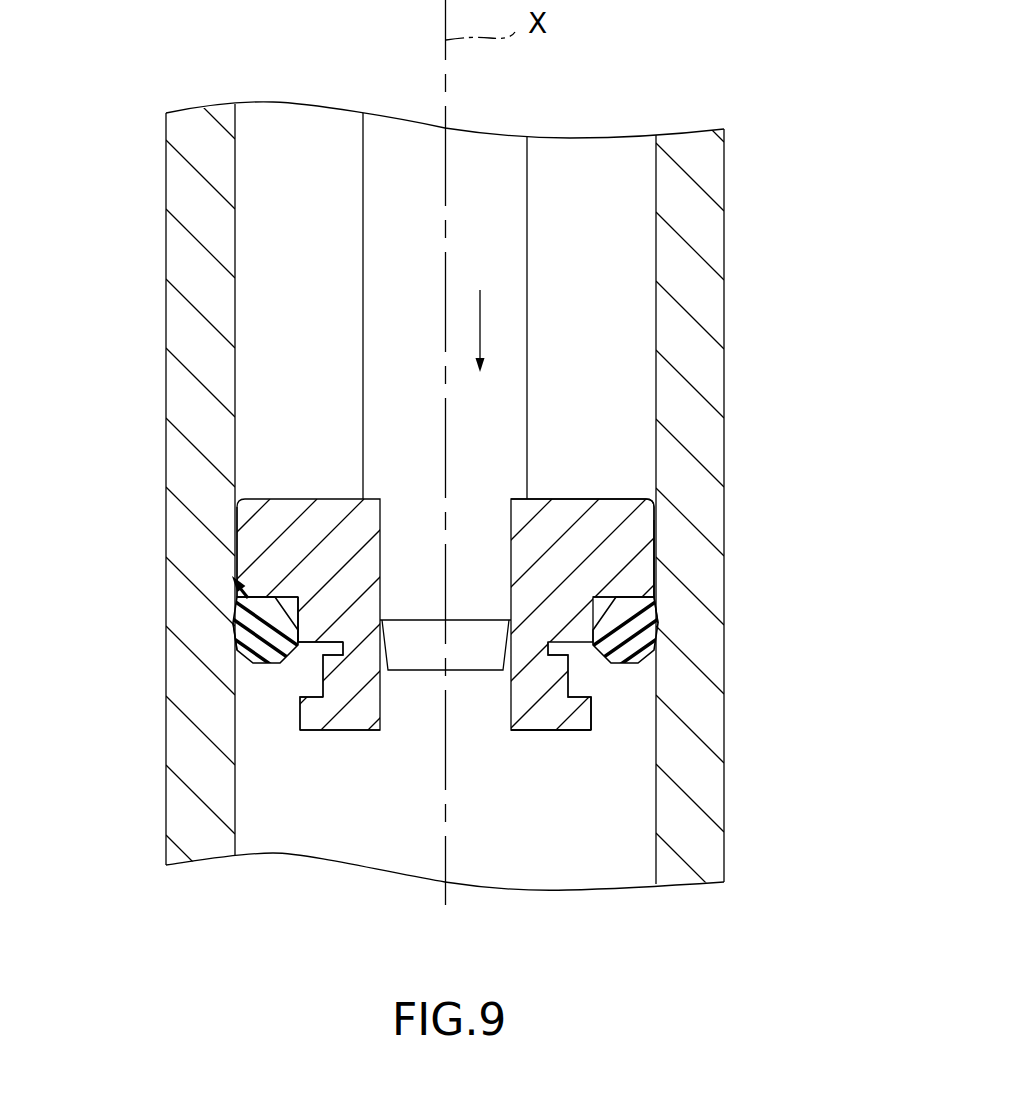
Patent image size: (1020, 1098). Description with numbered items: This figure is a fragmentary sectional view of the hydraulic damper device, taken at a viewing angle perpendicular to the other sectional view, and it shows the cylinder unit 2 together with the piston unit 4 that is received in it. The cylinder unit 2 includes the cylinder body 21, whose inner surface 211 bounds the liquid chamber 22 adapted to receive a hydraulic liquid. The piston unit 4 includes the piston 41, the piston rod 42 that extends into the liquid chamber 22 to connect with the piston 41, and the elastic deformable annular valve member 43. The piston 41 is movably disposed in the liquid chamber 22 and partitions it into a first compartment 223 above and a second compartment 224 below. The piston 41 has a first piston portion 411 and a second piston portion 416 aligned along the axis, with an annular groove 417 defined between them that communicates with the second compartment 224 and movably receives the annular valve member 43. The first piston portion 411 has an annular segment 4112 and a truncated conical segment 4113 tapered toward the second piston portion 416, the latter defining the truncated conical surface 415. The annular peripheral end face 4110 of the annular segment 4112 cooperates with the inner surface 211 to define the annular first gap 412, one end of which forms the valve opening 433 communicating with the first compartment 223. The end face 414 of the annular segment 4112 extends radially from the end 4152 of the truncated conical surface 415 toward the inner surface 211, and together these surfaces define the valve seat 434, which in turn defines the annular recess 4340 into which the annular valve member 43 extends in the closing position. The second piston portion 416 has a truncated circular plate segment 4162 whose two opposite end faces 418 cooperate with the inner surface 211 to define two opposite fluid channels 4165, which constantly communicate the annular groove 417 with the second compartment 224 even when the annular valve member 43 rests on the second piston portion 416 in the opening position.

The cylinder unit 2 is at (733, 222).
The liquid chamber 22 is at (596, 313).
The first compartment 223 is at (615, 390).
The cylinder body 21 is at (665, 758).
The inner surface 211 is at (657, 807).
The second compartment 224 is at (618, 852).
The piston unit 4 is at (540, 228).
The piston rod 42 is at (460, 173).
The piston 41 is at (608, 492).
The first piston portion 411 is at (813, 530).
The annular peripheral end face 4110 is at (652, 527).
The truncated conical segment 4113 is at (640, 563).
The annular segment 4112 is at (590, 613).
The annular first gap 412 is at (237, 518).
The end face 414 is at (262, 568).
The end of truncated conical surface 4152 is at (287, 593).
The truncated conical surface 415 is at (287, 603).
The annular groove 417 is at (287, 679).
The second piston portion 416 is at (578, 682).
The end faces 418 is at (300, 715).
The fluid channels 4165 is at (253, 722).
The truncated circular plate segment 4162 is at (548, 742).
The annular valve member 43 is at (622, 664).
The valve opening 433 is at (238, 604).
The valve seat 434 is at (237, 578).
The annular recess 4340 is at (657, 623).